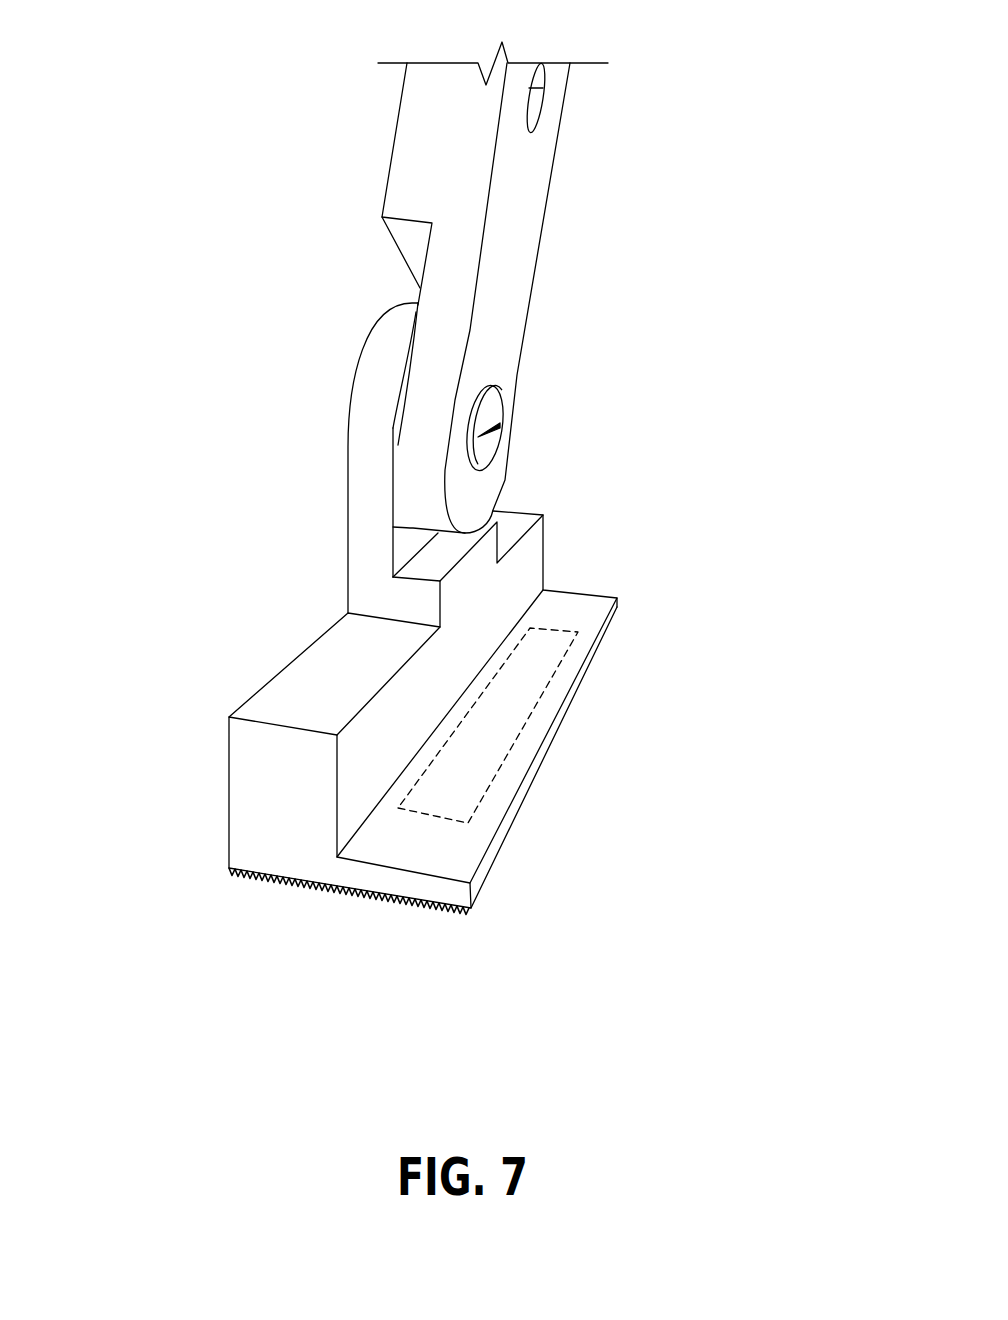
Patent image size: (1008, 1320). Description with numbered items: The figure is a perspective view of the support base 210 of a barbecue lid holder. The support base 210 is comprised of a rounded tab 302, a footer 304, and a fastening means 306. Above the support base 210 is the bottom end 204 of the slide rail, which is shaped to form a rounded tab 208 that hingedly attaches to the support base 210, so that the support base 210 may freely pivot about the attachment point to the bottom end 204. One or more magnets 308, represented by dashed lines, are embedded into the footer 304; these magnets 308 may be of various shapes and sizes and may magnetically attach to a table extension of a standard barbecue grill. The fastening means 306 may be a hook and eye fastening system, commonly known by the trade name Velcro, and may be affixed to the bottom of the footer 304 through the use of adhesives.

The bottom end 204 is at (392, 138).
The rounded tab 208 is at (503, 362).
The support base 210 is at (183, 497).
The rounded tab 302 is at (393, 462).
The footer 304 is at (582, 598).
The fastening means 306 is at (345, 897).
The magnets 308 is at (482, 744).